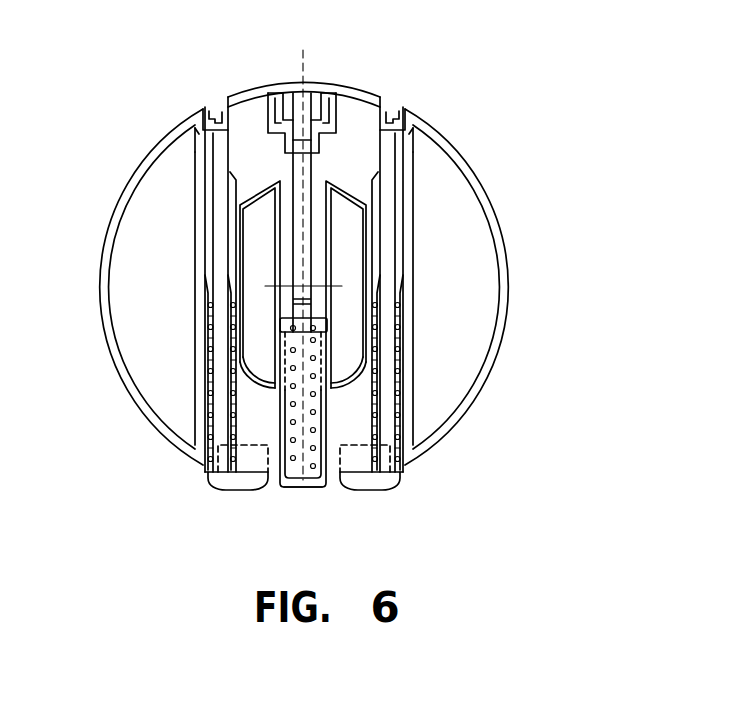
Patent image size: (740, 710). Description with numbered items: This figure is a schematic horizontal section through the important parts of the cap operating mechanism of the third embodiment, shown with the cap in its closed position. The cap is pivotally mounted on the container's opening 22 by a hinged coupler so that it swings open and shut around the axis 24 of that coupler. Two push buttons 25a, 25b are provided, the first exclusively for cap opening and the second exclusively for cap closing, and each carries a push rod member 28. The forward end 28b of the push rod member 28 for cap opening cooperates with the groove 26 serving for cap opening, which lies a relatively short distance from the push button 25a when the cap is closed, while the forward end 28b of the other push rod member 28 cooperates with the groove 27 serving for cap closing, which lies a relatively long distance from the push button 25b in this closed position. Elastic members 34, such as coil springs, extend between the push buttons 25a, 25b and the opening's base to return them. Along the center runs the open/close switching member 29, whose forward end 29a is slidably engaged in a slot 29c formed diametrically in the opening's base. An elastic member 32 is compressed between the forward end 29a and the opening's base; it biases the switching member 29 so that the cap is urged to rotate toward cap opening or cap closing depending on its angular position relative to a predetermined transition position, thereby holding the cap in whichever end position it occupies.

The container's opening 22 is at (262, 205).
The axis of the hinged coupler 24 is at (285, 118).
The push button exclusively used for cap opening 25a is at (241, 484).
The push button exclusively used for cap closing 25b is at (374, 484).
The groove serving for cap opening 26 is at (210, 105).
The groove serving for cap closing 27 is at (400, 108).
The push rod member 28 is at (221, 197).
The forward end of the push rod member 28b is at (197, 130).
The open/close switching member 29 is at (305, 237).
The forward end of the open/close switching member 29a is at (307, 317).
The slot 29c is at (330, 366).
The elastic member 32 is at (314, 479).
The elastic members 34 is at (212, 359).